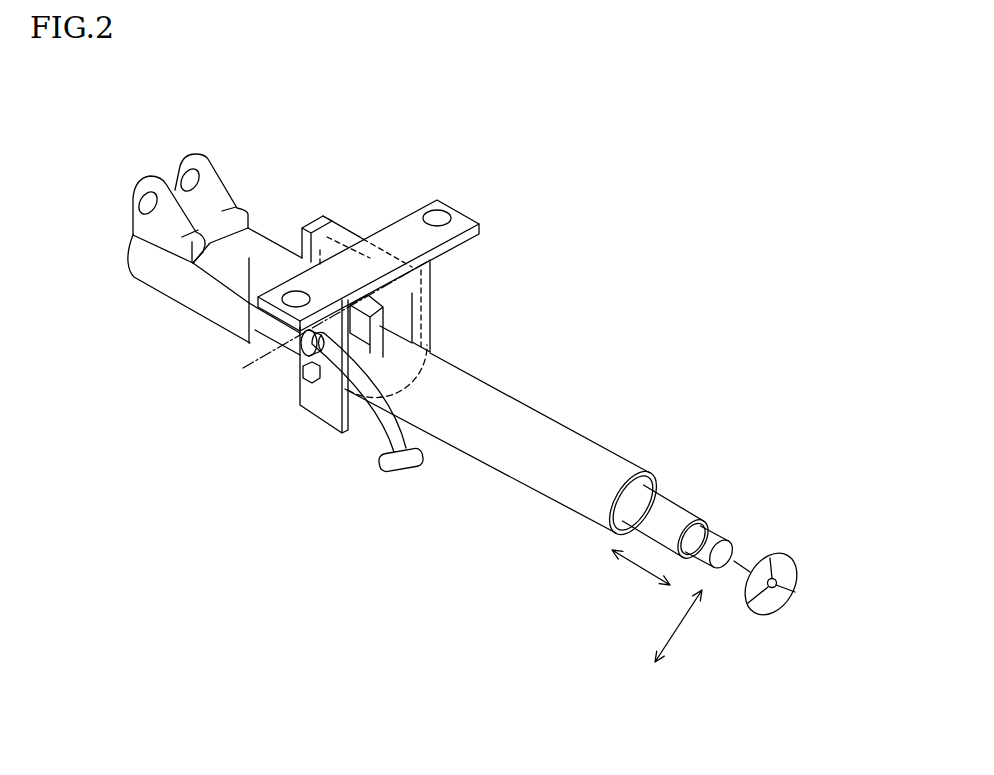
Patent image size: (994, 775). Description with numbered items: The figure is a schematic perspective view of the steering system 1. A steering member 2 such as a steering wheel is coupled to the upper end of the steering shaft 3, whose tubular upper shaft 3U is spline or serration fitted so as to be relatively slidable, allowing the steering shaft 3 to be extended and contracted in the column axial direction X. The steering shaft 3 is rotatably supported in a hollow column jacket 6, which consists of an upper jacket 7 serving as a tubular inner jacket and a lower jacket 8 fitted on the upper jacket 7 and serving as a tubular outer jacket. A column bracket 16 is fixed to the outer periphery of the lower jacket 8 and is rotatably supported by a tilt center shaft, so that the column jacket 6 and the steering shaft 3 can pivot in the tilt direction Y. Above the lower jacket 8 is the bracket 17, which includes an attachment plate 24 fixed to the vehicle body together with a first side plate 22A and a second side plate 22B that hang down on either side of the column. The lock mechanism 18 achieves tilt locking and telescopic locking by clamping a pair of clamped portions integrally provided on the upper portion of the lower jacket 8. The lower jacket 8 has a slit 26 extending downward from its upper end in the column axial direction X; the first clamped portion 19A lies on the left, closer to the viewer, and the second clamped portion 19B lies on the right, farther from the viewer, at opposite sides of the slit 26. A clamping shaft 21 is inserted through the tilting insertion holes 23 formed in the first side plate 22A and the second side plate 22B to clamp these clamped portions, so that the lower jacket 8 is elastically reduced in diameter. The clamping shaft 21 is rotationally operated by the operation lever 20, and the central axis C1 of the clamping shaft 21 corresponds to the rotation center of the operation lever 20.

The steering system 1 is at (731, 435).
The steering member 2 is at (776, 557).
The steering shaft 3 is at (676, 481).
The upper shaft 3U is at (688, 517).
The column jacket 6 is at (601, 425).
The upper jacket 7 is at (543, 431).
The lower jacket 8 is at (163, 277).
The column bracket 16 is at (200, 157).
The bracket 17 is at (322, 418).
The lock mechanism 18 is at (288, 337).
The first clamped portion 19A is at (249, 278).
The second clamped portion 19B is at (338, 237).
The operation lever 20 is at (378, 424).
The clamping shaft 21 is at (304, 350).
The first side plate 22A is at (302, 405).
The second side plate 22B is at (430, 273).
The tilting insertion holes 23 is at (315, 401).
The attachment plate 24 is at (405, 223).
The slit 26 is at (305, 226).
The central axis C1 is at (266, 370).
The column axial direction X is at (640, 567).
The tilt direction Y is at (680, 624).